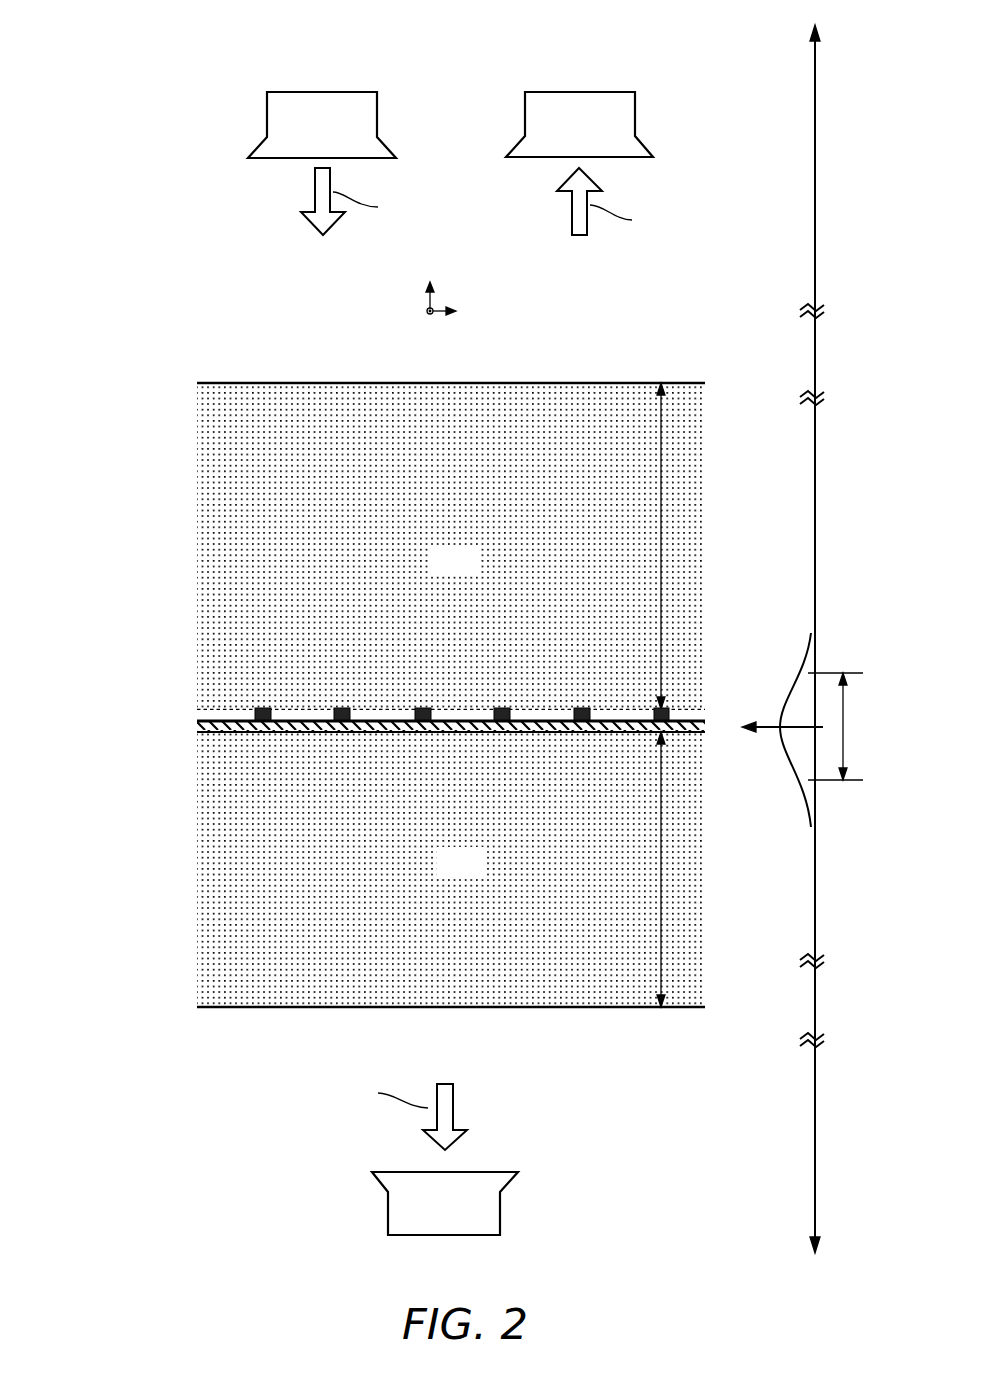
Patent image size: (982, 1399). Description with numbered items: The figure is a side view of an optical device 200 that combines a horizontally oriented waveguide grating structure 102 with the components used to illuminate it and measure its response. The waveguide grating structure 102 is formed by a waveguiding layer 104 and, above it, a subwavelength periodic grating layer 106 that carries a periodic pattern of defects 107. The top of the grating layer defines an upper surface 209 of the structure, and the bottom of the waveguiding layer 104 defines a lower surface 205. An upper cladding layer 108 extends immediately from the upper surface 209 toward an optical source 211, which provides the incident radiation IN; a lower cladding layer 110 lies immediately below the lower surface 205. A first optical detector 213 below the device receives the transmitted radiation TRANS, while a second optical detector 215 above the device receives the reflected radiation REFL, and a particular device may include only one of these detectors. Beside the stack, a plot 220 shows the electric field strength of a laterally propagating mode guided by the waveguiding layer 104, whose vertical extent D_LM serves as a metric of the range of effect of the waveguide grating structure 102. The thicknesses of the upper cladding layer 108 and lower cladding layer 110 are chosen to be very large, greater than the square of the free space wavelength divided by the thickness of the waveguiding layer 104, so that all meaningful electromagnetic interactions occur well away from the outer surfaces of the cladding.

The optical device 200 is at (178, 62).
The optical source 211 is at (377, 110).
The second optical detector 215 is at (635, 108).
The first optical detector 213 is at (388, 1212).
The upper cladding layer 108 is at (472, 570).
The lower cladding layer 110 is at (478, 872).
The waveguide grating structure 102 is at (108, 670).
The subwavelength periodic grating layer 106 is at (197, 716).
The waveguiding layer 104 is at (197, 726).
The defects 107 is at (423, 708).
The upper surface 209 is at (220, 709).
The lower surface 205 is at (225, 733).
The plot 220 is at (790, 688).